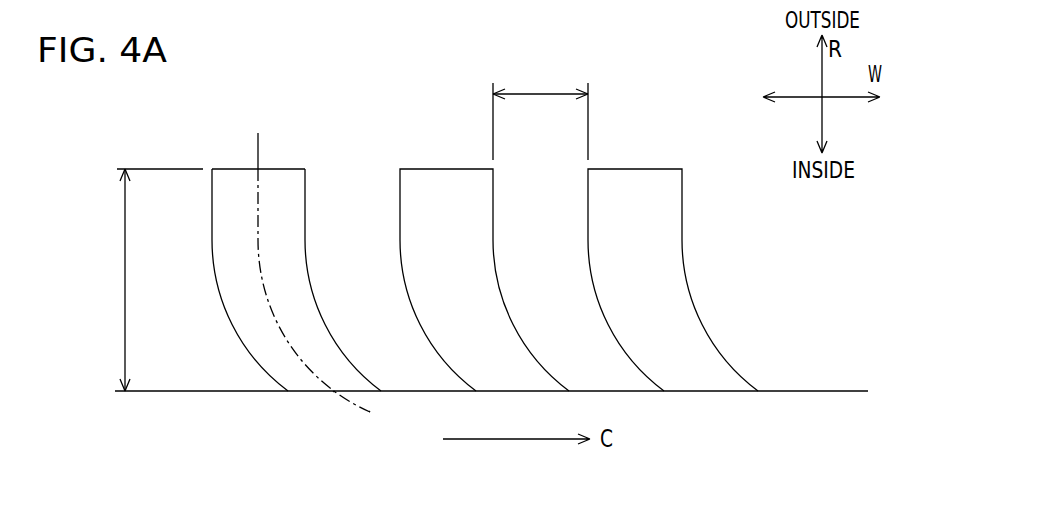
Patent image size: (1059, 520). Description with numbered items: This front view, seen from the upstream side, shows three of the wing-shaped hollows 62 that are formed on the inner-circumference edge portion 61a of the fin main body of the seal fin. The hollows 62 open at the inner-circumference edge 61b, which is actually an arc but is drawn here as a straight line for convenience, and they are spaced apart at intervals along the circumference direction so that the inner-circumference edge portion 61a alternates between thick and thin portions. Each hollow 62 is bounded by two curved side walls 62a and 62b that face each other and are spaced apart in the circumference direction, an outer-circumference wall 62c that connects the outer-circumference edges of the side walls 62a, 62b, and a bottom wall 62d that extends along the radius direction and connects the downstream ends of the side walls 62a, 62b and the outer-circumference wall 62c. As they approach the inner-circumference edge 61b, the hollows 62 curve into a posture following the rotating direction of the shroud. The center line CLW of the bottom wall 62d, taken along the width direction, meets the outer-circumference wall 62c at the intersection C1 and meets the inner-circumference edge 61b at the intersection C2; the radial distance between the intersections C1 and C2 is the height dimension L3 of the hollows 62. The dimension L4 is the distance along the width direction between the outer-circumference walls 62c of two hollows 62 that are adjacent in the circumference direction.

The hollow 62 is at (460, 249).
The side wall 62a is at (212, 205).
The side wall 62b is at (305, 205).
The outer-circumference wall 62c is at (246, 171).
The bottom wall 62d is at (280, 186).
The inner-circumference edge portion 61a is at (732, 258).
The inner-circumference edge 61b is at (810, 392).
The intersection C1 is at (258, 162).
The intersection C2 is at (333, 393).
The center line CLW is at (357, 409).
The height dimension L3 is at (145, 280).
The distance between adjacent hollows L4 is at (540, 112).